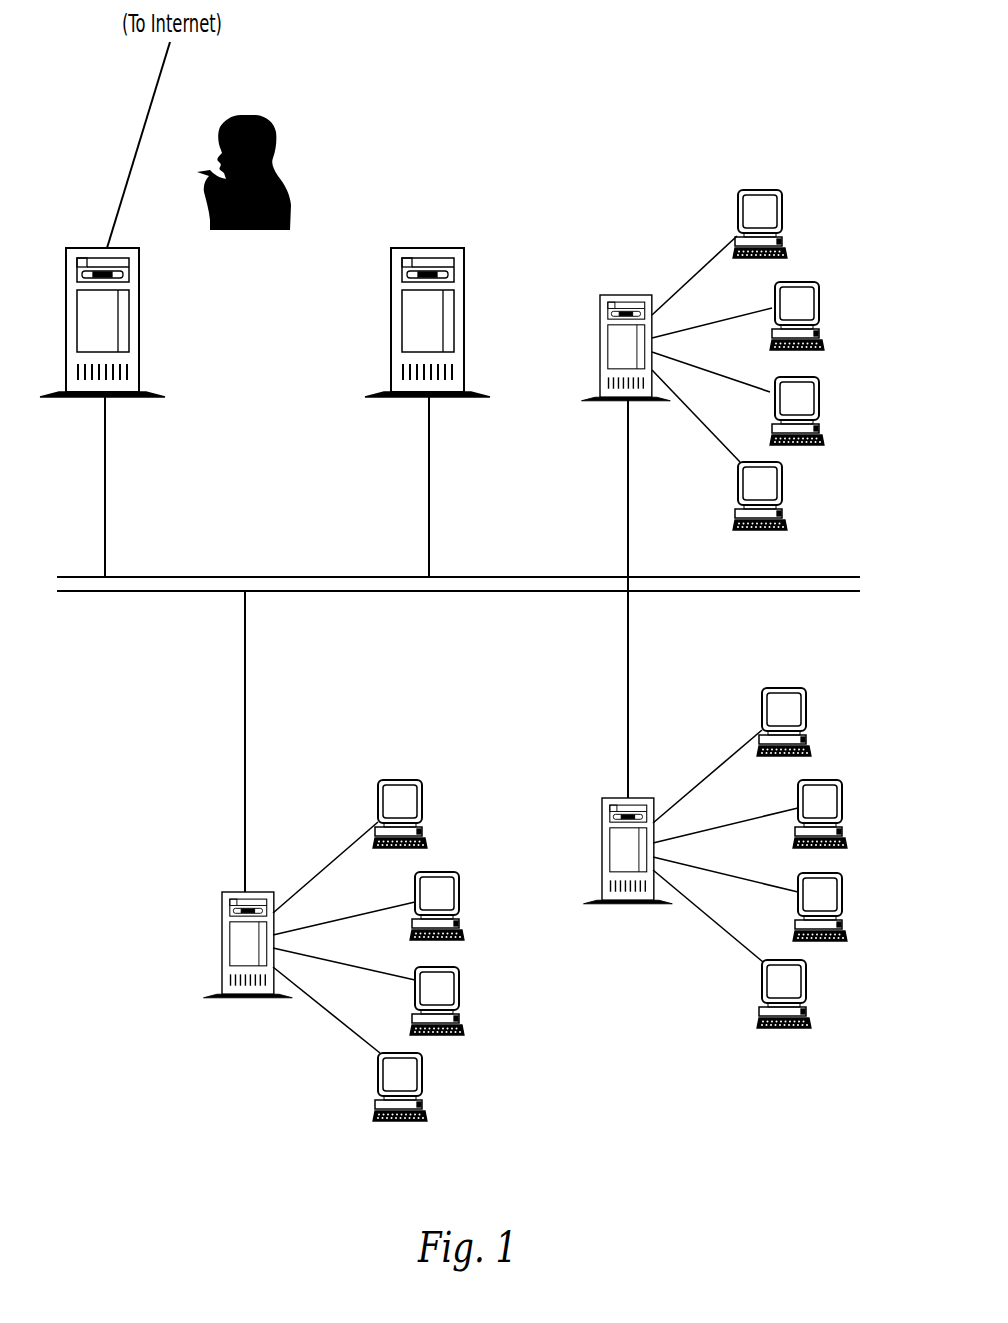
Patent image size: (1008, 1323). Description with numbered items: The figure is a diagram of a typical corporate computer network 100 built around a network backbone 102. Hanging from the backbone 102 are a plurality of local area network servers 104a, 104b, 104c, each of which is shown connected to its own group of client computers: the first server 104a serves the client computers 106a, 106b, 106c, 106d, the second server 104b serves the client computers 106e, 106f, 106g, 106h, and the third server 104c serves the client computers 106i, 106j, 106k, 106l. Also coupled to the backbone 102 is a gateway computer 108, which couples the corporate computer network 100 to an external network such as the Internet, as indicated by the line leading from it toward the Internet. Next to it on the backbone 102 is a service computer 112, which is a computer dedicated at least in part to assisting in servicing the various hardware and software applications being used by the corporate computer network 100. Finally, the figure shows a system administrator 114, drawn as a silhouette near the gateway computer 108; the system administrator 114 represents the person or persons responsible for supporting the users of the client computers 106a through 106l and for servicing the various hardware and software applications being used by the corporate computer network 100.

The corporate computer network 100 is at (532, 58).
The network backbone 102 is at (330, 593).
The local area network server 104a is at (600, 340).
The local area network server 104b is at (625, 907).
The local area network server 104c is at (243, 998).
The client computer 106a is at (776, 212).
The client computer 106b is at (812, 306).
The client computer 106c is at (812, 400).
The client computer 106d is at (776, 487).
The client computer 106e is at (802, 710).
The client computer 106f is at (836, 798).
The client computer 106g is at (836, 893).
The client computer 106h is at (802, 982).
The client computer 106i is at (417, 801).
The client computer 106j is at (453, 895).
The client computer 106k is at (453, 988).
The client computer 106l is at (417, 1078).
The gateway computer 108 is at (139, 306).
The service computer 112 is at (391, 318).
The system administrator 114 is at (275, 137).